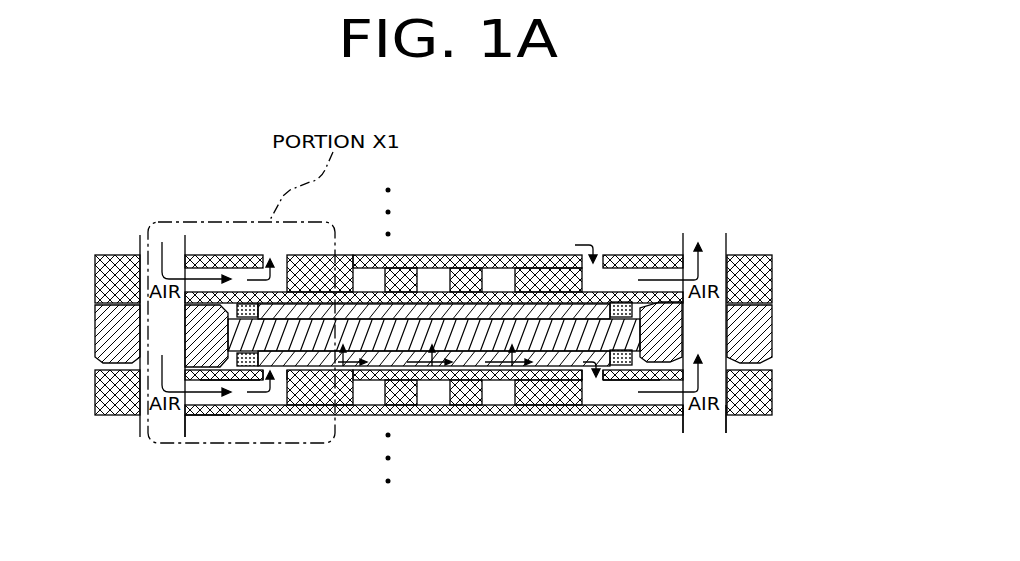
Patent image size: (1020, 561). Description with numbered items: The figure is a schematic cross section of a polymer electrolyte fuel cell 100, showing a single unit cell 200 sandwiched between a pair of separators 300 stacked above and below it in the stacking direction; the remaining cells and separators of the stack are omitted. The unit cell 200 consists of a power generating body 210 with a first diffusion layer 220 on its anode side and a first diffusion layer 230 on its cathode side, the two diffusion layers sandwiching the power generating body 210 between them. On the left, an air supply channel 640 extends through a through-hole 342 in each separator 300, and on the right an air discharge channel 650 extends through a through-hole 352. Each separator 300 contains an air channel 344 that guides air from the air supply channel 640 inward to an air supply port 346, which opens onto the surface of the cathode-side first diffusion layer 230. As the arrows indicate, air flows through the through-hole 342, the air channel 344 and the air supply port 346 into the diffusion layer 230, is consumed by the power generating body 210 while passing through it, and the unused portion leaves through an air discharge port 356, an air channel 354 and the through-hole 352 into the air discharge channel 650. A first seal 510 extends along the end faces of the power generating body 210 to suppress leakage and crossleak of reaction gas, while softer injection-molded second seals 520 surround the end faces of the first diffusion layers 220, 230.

The fuel cell 100 is at (590, 190).
The unit cell 200 is at (434, 261).
The power generating body 210 is at (505, 320).
The first diffusion layer 220 is at (443, 310).
The first diffusion layer 230 is at (568, 355).
The separator 300 is at (773, 255).
The through-hole 342 is at (180, 414).
The air channel 344 is at (238, 397).
The air supply port 346 is at (283, 378).
The through-hole 352 is at (692, 432).
The air channel 354 is at (617, 390).
The air discharge port 356 is at (598, 380).
The first seal 510 is at (227, 285).
The second seal 520 is at (242, 285).
The air supply channel 640 is at (175, 428).
The air discharge channel 650 is at (727, 425).